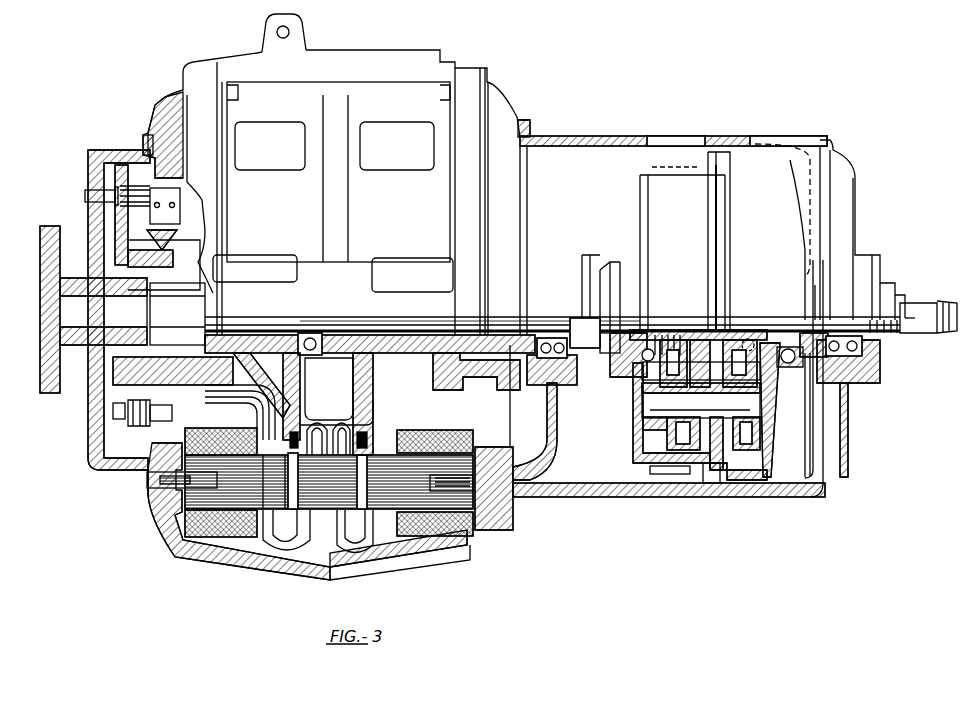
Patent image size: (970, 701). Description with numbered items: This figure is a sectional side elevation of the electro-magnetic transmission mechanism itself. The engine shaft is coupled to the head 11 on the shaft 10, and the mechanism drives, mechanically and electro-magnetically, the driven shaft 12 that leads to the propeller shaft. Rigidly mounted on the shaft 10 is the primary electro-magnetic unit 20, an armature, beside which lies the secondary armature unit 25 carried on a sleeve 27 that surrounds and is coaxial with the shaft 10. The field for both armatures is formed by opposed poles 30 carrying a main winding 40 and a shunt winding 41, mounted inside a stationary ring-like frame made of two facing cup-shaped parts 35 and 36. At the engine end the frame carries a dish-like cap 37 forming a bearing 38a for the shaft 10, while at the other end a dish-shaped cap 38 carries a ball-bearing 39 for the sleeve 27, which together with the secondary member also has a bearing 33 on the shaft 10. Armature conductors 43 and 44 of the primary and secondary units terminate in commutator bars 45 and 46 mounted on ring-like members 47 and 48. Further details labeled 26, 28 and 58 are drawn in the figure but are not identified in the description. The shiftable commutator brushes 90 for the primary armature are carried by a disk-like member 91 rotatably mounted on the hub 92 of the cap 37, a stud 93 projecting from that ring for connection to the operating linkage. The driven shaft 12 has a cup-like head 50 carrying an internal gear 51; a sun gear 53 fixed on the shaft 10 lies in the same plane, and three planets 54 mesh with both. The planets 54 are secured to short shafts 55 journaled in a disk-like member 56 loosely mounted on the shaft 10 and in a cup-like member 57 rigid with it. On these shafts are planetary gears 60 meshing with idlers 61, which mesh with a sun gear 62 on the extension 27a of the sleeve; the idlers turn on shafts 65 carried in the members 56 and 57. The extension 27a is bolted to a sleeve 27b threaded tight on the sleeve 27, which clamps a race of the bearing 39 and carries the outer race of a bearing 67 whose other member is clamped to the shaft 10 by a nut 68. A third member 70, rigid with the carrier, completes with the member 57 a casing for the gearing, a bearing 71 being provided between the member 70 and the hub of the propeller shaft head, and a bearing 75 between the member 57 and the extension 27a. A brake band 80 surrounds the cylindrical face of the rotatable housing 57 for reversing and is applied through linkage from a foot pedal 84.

The shaft 10 is at (388, 288).
The head 11 is at (45, 250).
The driven shaft 12 is at (912, 310).
The primary electro-magnetic unit 20 is at (300, 520).
The armature unit 25 is at (362, 586).
The field coil 26 is at (292, 520).
The sleeve 27 is at (392, 342).
The extension 27a is at (676, 332).
The sleeve 27b is at (678, 360).
The commutator 28 is at (378, 512).
The poles 30 is at (190, 506).
The bearing 33 is at (310, 334).
The cup-shaped part 35 is at (407, 100).
The cup-shaped part 36 is at (150, 570).
The dish-like cap 37 is at (110, 150).
The dish-shaped cap 38 is at (534, 456).
The bearing 38a is at (150, 345).
The ball-bearing 39 is at (548, 338).
The main winding 40 is at (170, 540).
The shunt winding 41 is at (516, 530).
The armature conductors 43 is at (240, 420).
The armature conductors 44 is at (402, 404).
The commutator bars 45 is at (196, 385).
The commutator bars 46 is at (148, 498).
The ring-like member 47 is at (240, 350).
The ring-like member 48 is at (565, 136).
The cup-like head 50 is at (812, 330).
The internal gear 51 is at (745, 465).
The sun gear 53 is at (745, 333).
The planets 54 is at (762, 430).
The short shafts 55 is at (648, 408).
The disk-like member 56 is at (718, 183).
The cup-like member 57 is at (640, 197).
The bolt 58 is at (718, 482).
The planetary gears 60 is at (672, 432).
The idlers 61 is at (644, 372).
The sun gear 62 is at (688, 336).
The shafts 65 is at (748, 338).
The bearing 67 is at (606, 332).
The nut 68 is at (628, 272).
The third member 70 is at (777, 457).
The bearing 71 is at (828, 367).
The bearing 75 is at (652, 338).
The brake band 80 is at (652, 474).
The foot pedal 84 is at (582, 484).
The commutator brushes 90 is at (182, 203).
The disk-like member 91 is at (150, 414).
The hub 92 is at (135, 272).
The stud 93 is at (88, 196).